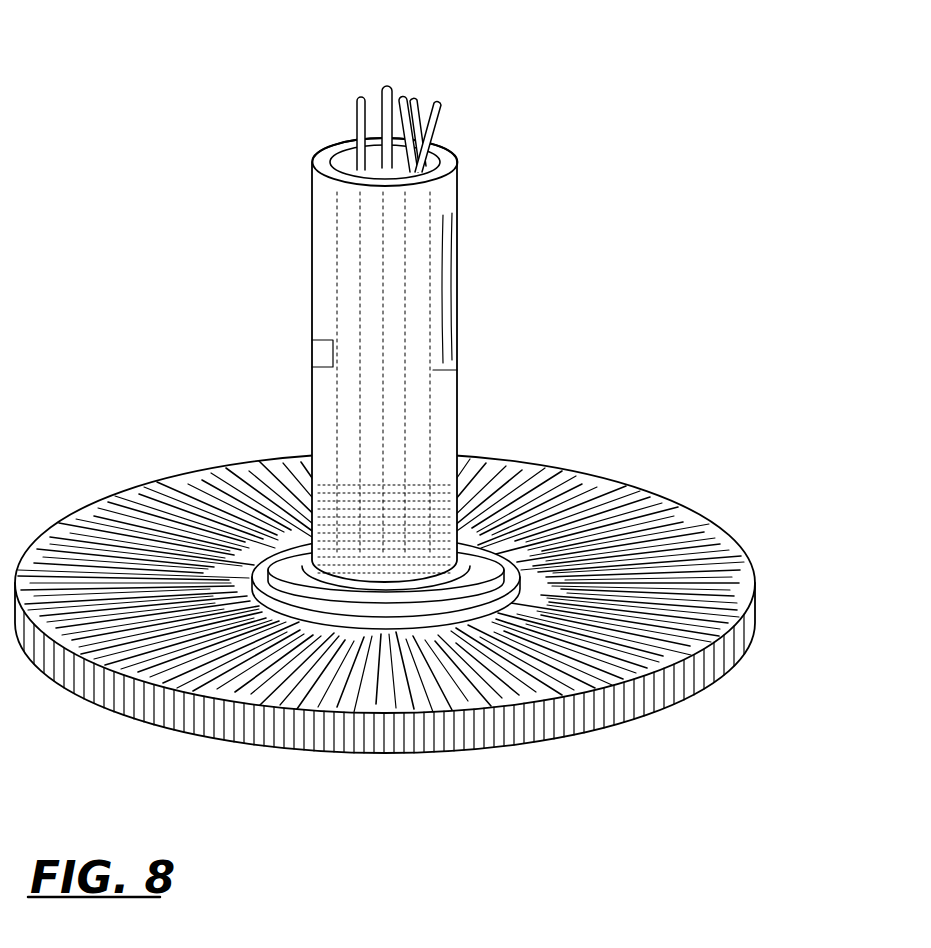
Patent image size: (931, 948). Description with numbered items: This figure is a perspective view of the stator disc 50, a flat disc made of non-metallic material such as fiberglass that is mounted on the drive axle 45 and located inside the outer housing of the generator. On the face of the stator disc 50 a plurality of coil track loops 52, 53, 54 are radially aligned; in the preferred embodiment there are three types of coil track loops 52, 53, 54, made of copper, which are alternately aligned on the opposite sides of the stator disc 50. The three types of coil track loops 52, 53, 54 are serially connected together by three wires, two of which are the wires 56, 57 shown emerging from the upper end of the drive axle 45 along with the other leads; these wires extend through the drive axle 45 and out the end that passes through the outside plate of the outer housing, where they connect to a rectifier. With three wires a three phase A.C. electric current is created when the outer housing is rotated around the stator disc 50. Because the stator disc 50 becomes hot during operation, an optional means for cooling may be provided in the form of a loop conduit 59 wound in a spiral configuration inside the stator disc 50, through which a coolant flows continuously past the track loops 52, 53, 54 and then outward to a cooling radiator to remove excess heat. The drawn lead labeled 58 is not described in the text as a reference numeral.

The drive axle 45 is at (457, 307).
The stator disc 50 is at (577, 459).
The coil track loop 52 is at (138, 483).
The coil track loop 53 is at (170, 473).
The coil track loop 54 is at (212, 467).
The wire 56 is at (405, 92).
The wire 57 is at (423, 93).
The wire lead 58 is at (437, 130).
The loop conduit 59 is at (378, 100).